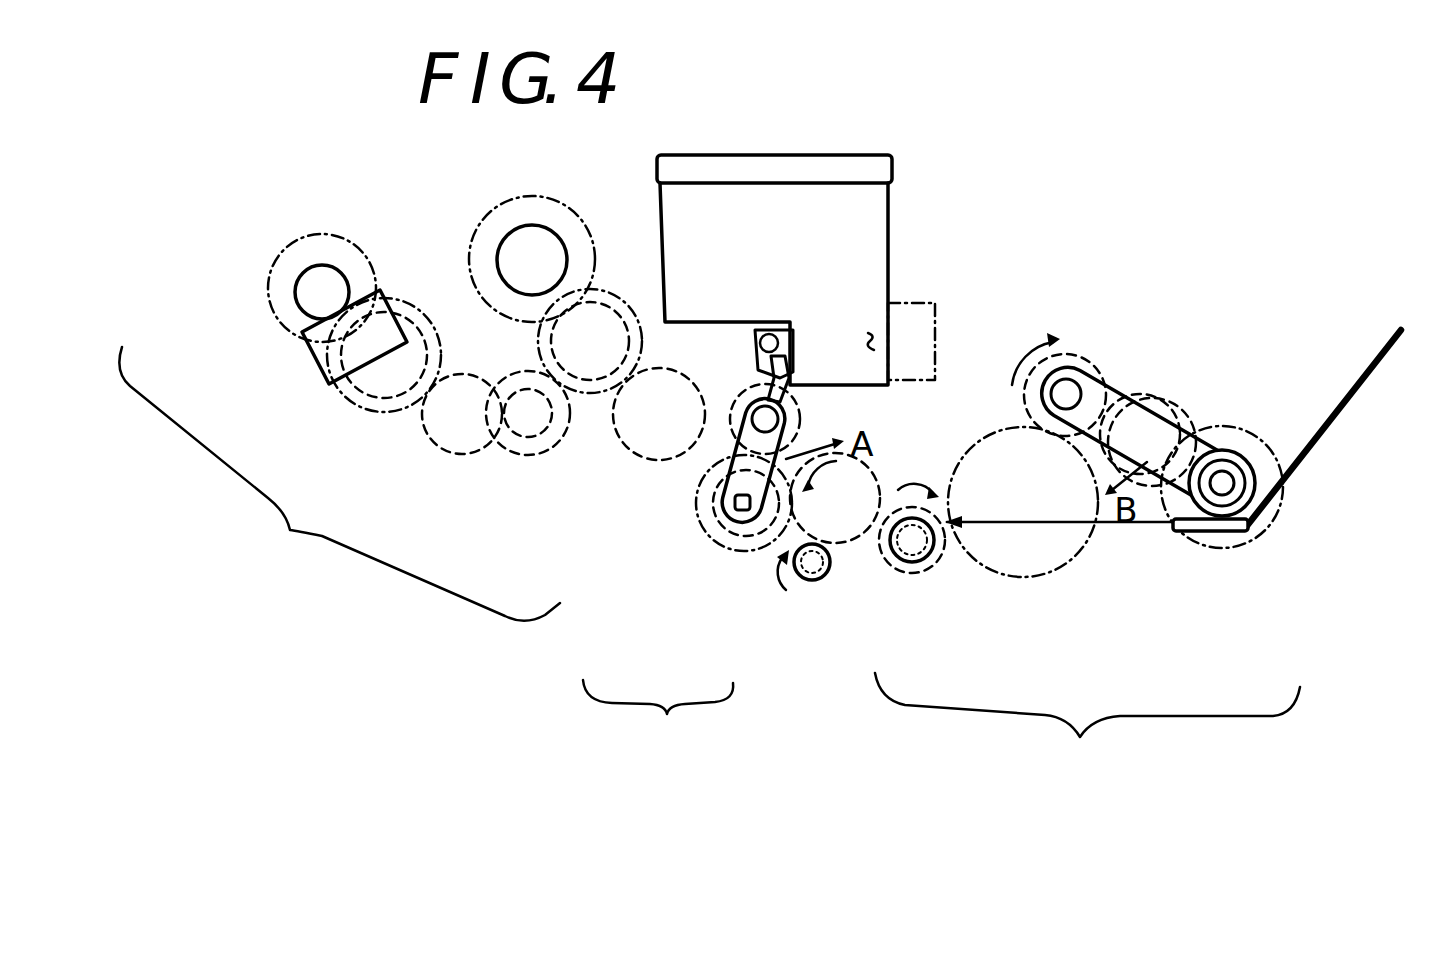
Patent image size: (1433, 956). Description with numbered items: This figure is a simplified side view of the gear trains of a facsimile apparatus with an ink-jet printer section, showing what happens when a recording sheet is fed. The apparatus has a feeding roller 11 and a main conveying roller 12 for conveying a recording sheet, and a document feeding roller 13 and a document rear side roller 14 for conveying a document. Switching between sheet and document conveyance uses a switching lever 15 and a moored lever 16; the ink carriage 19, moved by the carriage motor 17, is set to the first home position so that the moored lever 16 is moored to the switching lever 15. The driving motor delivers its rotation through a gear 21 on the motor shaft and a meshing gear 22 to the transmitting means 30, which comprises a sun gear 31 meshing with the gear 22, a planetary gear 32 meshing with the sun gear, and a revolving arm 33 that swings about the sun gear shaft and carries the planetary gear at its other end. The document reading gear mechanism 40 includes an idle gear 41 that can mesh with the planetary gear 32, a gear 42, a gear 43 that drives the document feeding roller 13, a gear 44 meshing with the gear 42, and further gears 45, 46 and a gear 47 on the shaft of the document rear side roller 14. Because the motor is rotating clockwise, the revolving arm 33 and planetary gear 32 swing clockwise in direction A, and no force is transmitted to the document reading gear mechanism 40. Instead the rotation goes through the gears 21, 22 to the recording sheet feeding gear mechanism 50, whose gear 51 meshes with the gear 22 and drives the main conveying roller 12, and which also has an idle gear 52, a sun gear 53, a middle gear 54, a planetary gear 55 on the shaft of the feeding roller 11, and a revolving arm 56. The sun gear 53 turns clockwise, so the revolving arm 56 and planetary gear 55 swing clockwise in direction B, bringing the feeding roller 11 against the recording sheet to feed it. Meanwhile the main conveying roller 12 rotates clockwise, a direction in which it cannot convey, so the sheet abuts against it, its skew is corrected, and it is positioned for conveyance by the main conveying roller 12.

The feeding roller 11 is at (1247, 463).
The main conveying roller 12 is at (908, 562).
The document feeding roller 13 is at (545, 245).
The document rear side roller 14 is at (293, 298).
The switching lever 15 is at (787, 390).
The moored lever 16 is at (773, 325).
The carriage motor 17 is at (927, 330).
The ink carriage 19 is at (880, 217).
The gear 21 is at (806, 580).
The gear 22 is at (856, 545).
The transmitting means 30 is at (658, 723).
The sun gear 31 is at (722, 550).
The planetary gear 32 is at (738, 430).
The revolving arm 33 is at (728, 518).
The document reading gear mechanism 40 is at (339, 484).
The idle gear 41 is at (628, 450).
The gear 42 is at (593, 395).
The gear 43 is at (480, 224).
The gear 44 is at (507, 447).
The gear 45 is at (440, 437).
The gear 46 is at (360, 408).
The gear 47 is at (298, 333).
The recording sheet feeding gear mechanism 50 is at (1087, 729).
The gear 51 is at (931, 573).
The idle gear 52 is at (1025, 577).
The sun gear 53 is at (1077, 357).
The middle gear 54 is at (1148, 490).
The planetary gear 55 is at (1252, 548).
The revolving arm 56 is at (1172, 532).